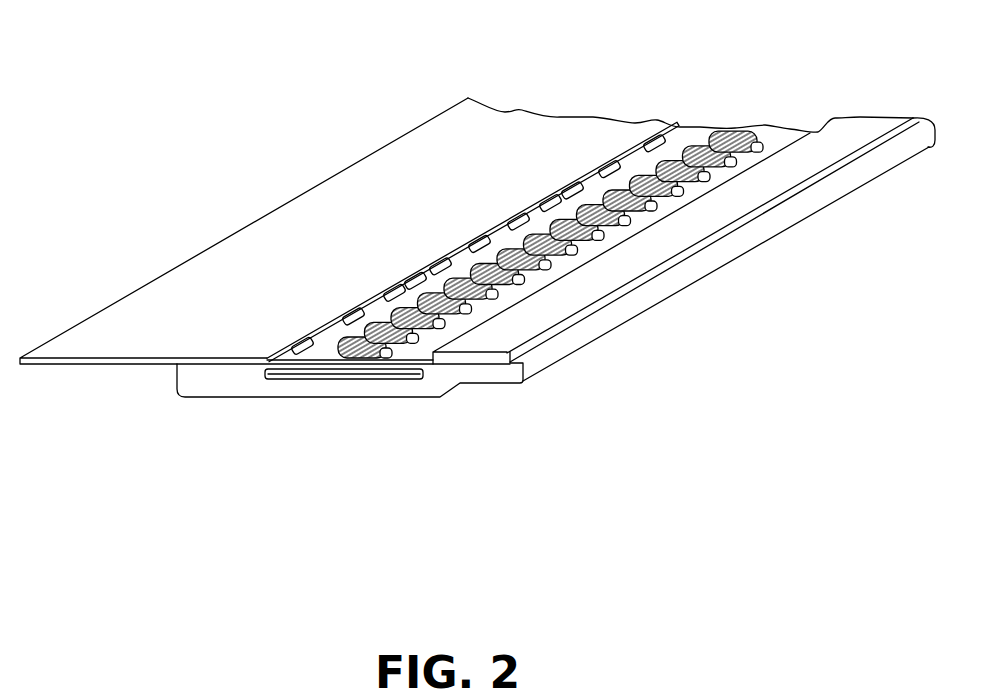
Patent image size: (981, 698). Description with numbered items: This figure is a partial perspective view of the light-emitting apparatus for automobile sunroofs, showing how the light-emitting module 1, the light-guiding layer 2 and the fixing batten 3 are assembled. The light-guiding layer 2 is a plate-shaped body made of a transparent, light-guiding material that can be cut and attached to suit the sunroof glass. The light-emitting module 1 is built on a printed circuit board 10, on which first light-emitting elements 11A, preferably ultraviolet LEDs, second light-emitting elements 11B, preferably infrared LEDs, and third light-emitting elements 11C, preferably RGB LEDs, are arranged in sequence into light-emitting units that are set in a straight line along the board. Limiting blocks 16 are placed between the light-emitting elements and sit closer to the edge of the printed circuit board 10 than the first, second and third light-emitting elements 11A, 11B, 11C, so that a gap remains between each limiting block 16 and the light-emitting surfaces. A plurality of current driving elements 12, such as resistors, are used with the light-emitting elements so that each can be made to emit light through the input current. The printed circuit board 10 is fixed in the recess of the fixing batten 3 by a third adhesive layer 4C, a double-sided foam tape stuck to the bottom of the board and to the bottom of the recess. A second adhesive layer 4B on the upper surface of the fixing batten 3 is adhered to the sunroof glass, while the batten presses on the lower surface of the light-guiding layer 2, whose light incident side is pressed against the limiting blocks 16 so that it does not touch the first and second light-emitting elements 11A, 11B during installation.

The light-emitting module 1 is at (791, 119).
The light-guiding layer 2 is at (372, 168).
The fixing batten 3 is at (411, 381).
The second adhesive layer 4B is at (541, 320).
The third adhesive layer 4C is at (326, 378).
The printed circuit board 10 is at (298, 379).
The first light-emitting element 11A is at (294, 341).
The second light-emitting element 11B is at (342, 315).
The third light-emitting element 11C is at (386, 298).
The current driving element 12 is at (727, 136).
The limiting block 16 is at (406, 287).